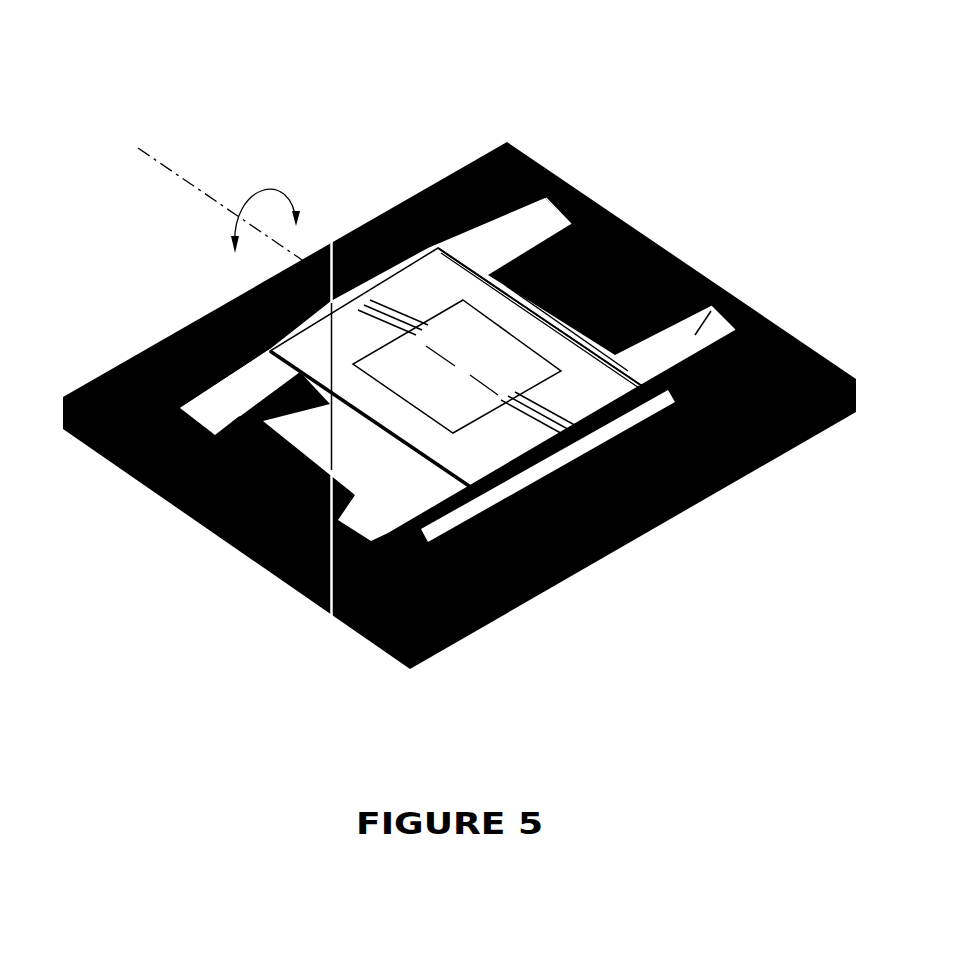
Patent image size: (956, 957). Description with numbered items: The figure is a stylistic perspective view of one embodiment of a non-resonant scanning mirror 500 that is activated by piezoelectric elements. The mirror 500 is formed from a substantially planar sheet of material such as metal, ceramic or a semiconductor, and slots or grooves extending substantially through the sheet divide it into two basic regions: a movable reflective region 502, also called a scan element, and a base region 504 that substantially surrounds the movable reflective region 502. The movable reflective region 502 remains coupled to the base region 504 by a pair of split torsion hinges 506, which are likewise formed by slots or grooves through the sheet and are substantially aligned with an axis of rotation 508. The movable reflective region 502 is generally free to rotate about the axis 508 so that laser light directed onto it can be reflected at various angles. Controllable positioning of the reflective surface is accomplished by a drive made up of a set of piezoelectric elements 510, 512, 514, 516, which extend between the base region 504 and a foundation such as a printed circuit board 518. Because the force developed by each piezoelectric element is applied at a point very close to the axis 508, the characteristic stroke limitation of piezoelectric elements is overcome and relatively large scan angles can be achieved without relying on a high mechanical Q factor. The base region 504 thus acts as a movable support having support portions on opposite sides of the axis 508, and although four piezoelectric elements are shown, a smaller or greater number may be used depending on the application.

The non-resonant scanning mirror 500 is at (418, 275).
The movable reflective region 502 is at (247, 560).
The base region 504 is at (320, 326).
The split torsion hinges 506 is at (225, 293).
The axis of rotation 508 is at (170, 167).
The piezoelectric element 510 is at (127, 476).
The piezoelectric element 512 is at (325, 600).
The piezoelectric element 514 is at (727, 284).
The piezoelectric element 516 is at (453, 160).
The printed circuit board 518 is at (777, 443).